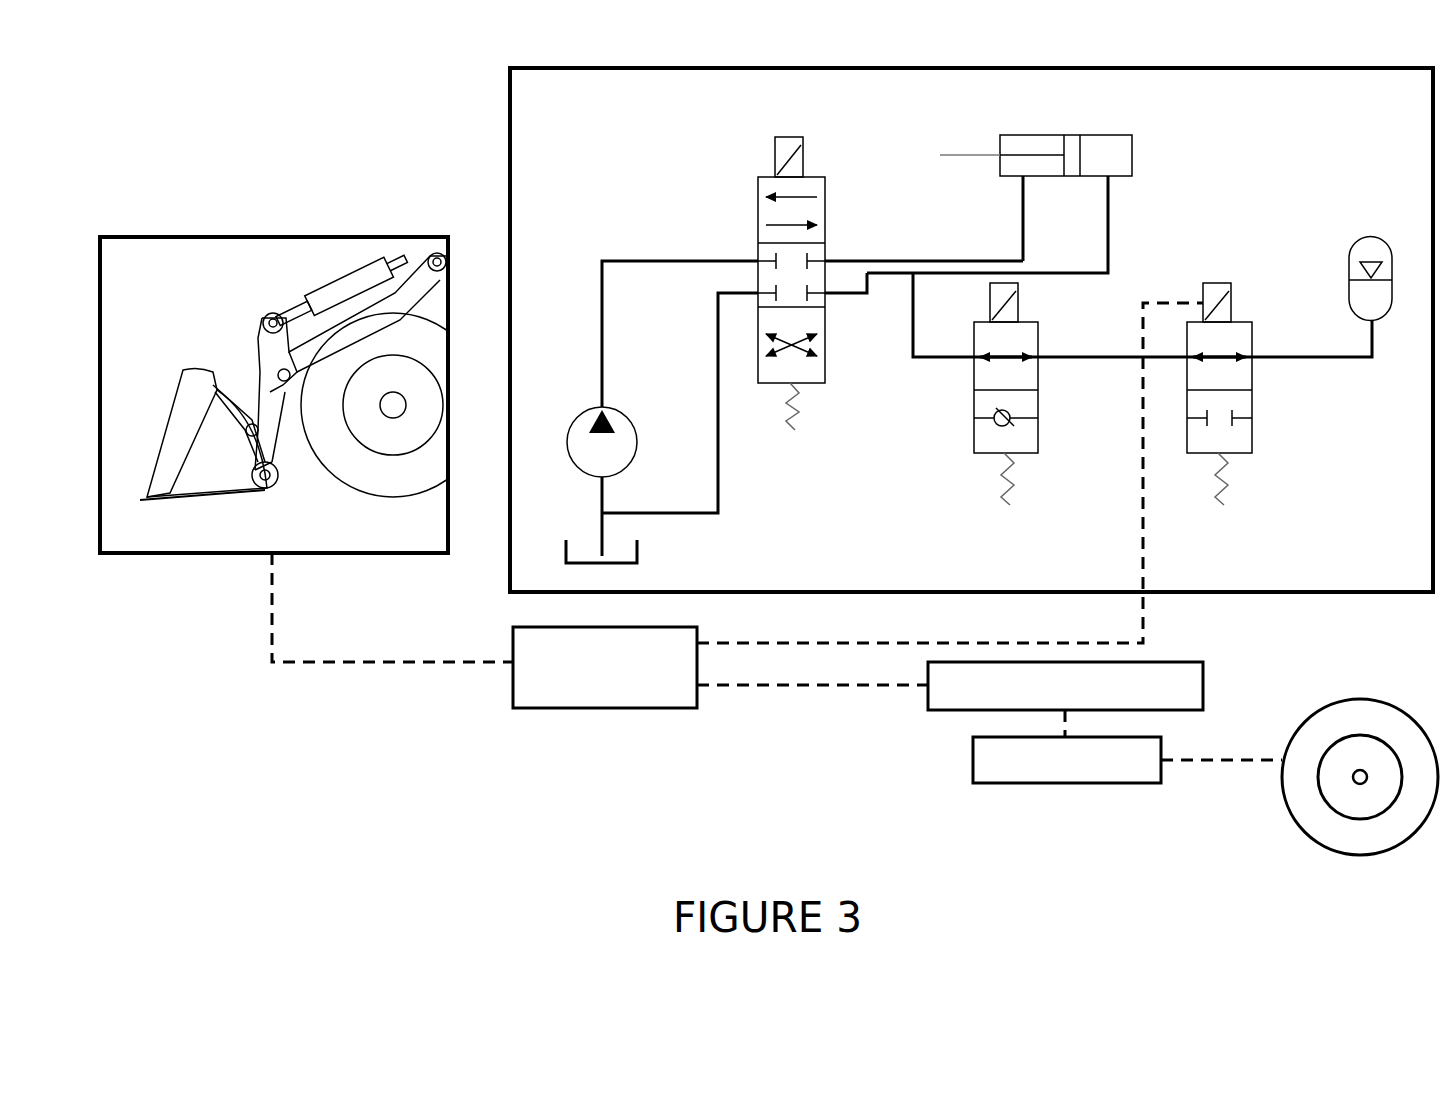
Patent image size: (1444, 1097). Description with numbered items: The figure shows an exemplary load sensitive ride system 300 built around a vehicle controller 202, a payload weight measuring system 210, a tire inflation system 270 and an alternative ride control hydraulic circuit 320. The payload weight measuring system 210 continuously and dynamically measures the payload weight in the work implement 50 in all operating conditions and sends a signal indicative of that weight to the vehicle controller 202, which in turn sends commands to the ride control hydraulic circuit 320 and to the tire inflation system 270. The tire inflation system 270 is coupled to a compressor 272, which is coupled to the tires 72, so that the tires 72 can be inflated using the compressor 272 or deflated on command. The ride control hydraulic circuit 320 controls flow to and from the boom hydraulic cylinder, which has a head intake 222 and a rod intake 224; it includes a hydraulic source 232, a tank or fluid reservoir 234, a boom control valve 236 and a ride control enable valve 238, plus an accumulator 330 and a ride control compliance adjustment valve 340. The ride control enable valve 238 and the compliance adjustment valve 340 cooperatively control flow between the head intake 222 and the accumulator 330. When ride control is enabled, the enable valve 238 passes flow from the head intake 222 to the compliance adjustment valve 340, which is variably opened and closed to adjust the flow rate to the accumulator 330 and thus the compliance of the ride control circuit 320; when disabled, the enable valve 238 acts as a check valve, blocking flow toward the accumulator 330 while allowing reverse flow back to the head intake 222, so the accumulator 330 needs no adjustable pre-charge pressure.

The load sensitive ride system 300 is at (855, 468).
The payload weight measuring system 210 is at (292, 395).
The work implement 50 is at (168, 443).
The tire 72 is at (1321, 719).
The boom control valve 236 is at (738, 194).
The hydraulic source 232 is at (622, 418).
The tank or fluid reservoir 234 is at (586, 536).
The rod intake 224 is at (1020, 178).
The head intake 222 is at (1110, 178).
The ride control hydraulic circuit 320 is at (971, 330).
The accumulator 330 is at (1350, 251).
The ride control enable valve 238 is at (945, 402).
The ride control compliance adjustment valve 340 is at (1288, 403).
The vehicle controller 202 is at (510, 693).
The tire inflation system 270 is at (926, 704).
The compressor 272 is at (971, 775).